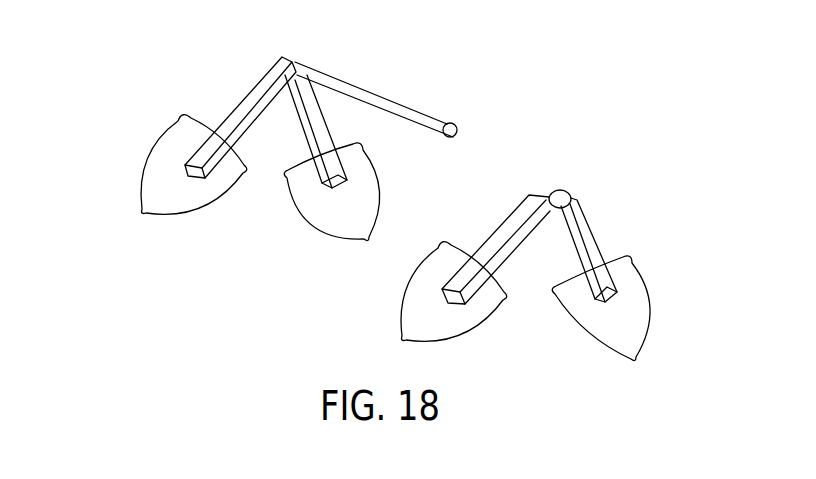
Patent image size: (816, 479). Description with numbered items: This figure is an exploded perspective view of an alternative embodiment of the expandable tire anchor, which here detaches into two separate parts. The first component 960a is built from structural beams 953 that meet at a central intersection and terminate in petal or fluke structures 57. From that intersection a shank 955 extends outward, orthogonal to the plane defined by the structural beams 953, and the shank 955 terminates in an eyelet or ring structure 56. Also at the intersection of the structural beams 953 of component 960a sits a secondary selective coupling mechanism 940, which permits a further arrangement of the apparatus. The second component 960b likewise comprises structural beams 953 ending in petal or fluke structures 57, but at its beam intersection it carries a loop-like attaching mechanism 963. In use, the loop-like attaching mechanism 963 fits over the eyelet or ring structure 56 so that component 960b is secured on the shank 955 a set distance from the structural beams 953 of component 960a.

The secondary selective coupling mechanism 940 is at (308, 42).
The structural beams 953 is at (296, 108).
The shank 955 is at (383, 97).
The eyelet or ring structure 56 is at (456, 126).
The petal or fluke structures 57 is at (185, 195).
The component 960a is at (118, 198).
The component 960b is at (651, 375).
The loop-like attaching mechanism 963 is at (560, 189).